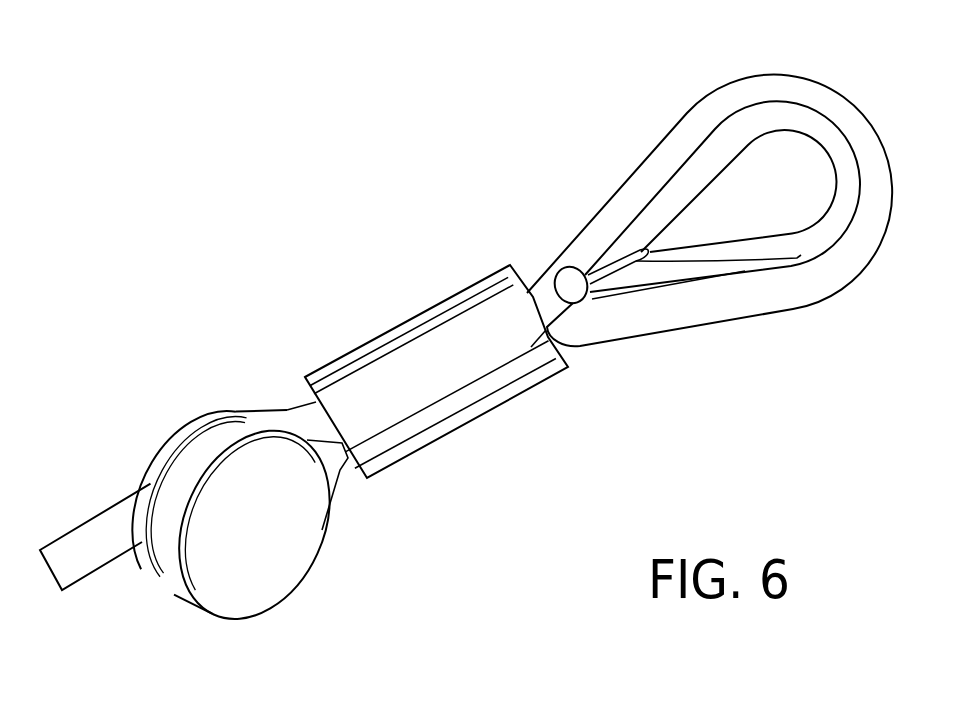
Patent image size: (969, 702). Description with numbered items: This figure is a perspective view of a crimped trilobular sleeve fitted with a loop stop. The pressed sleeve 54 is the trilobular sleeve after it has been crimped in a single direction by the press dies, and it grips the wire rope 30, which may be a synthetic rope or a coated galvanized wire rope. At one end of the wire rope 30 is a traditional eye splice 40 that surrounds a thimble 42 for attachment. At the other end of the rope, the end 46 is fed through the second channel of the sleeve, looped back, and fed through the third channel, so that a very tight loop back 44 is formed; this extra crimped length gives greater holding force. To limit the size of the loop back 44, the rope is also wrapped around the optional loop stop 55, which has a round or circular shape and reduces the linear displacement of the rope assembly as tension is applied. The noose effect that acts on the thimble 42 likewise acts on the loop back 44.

The wire rope 30 is at (85, 568).
The eye splice 40 is at (863, 223).
The thimble 42 is at (762, 115).
The loop back 44 is at (188, 455).
The end of the rope 46 is at (570, 282).
The pressed sleeve 54 is at (412, 327).
The loop stop 55 is at (270, 570).